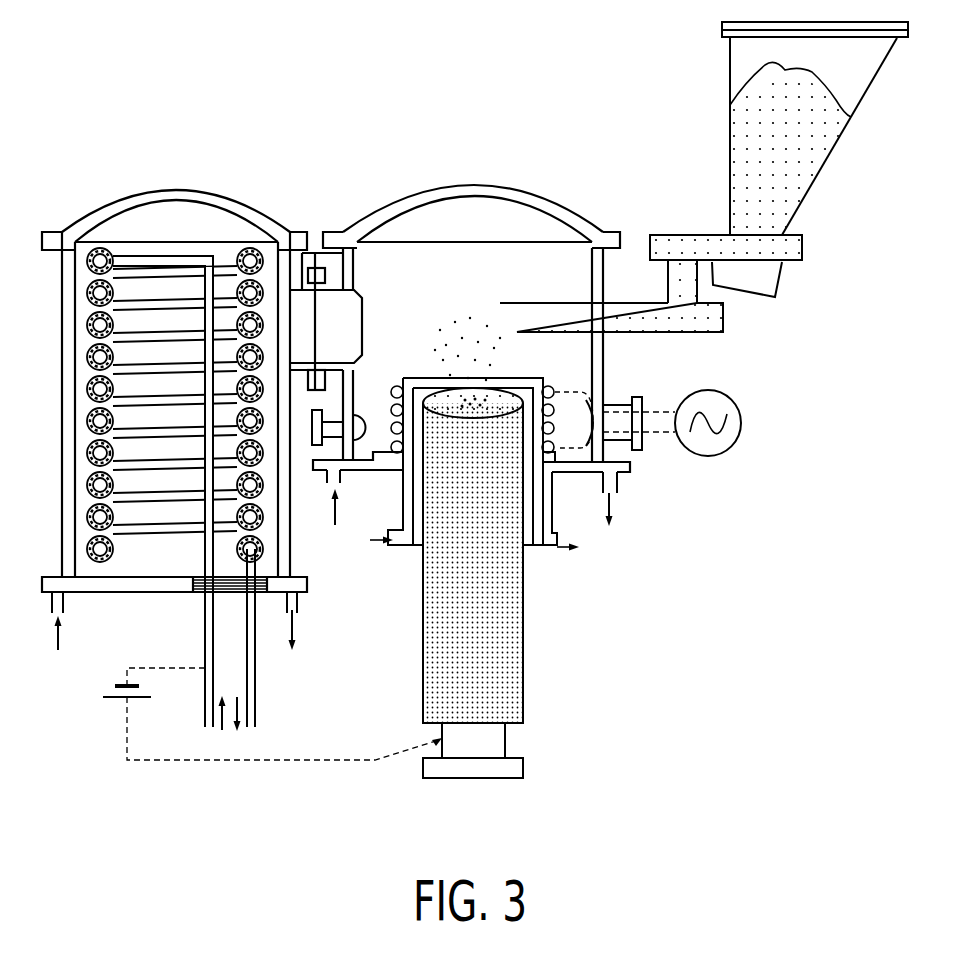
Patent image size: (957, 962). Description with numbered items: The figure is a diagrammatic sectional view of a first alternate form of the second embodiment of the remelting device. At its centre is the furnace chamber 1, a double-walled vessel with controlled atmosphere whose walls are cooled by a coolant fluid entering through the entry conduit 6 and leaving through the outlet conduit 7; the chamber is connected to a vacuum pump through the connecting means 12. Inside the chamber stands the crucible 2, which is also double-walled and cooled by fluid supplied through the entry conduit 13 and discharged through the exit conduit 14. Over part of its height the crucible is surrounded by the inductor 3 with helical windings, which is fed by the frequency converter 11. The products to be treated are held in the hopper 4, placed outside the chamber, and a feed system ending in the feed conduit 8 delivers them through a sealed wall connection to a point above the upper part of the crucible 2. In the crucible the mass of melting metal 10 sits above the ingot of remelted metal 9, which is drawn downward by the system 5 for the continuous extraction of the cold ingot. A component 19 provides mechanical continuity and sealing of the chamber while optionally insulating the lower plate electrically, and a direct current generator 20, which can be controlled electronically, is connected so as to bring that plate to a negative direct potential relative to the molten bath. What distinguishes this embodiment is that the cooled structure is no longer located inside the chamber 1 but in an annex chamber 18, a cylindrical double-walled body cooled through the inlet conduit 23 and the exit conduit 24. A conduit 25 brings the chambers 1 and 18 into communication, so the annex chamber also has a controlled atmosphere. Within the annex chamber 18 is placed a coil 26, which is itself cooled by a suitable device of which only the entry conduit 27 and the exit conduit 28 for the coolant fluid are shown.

The chamber 1 is at (503, 215).
The crucible 2 is at (397, 385).
The inductor 3 is at (565, 440).
The hopper 4 is at (753, 125).
The system for the continuous extraction of the cold ingot 5 is at (515, 770).
The entry conduit 6 is at (328, 486).
The outlet conduit 7 is at (618, 489).
The feed conduit 8 is at (548, 318).
The ingot of remelted metal 9 is at (510, 688).
The mass of melting metal 10 is at (462, 400).
The frequency converter 11 is at (741, 414).
The connecting means 12 is at (338, 430).
The entry conduit 13 is at (388, 540).
The exit conduit 14 is at (553, 547).
The annex chamber 18 is at (90, 205).
The component 19 is at (195, 592).
The direct current generator 20 is at (120, 700).
The inlet conduit 23 is at (67, 603).
The exit conduit 24 is at (303, 605).
The conduit 25 is at (302, 287).
The coil 26 is at (149, 255).
The entry conduit 27 is at (205, 712).
The exit conduit 28 is at (255, 712).